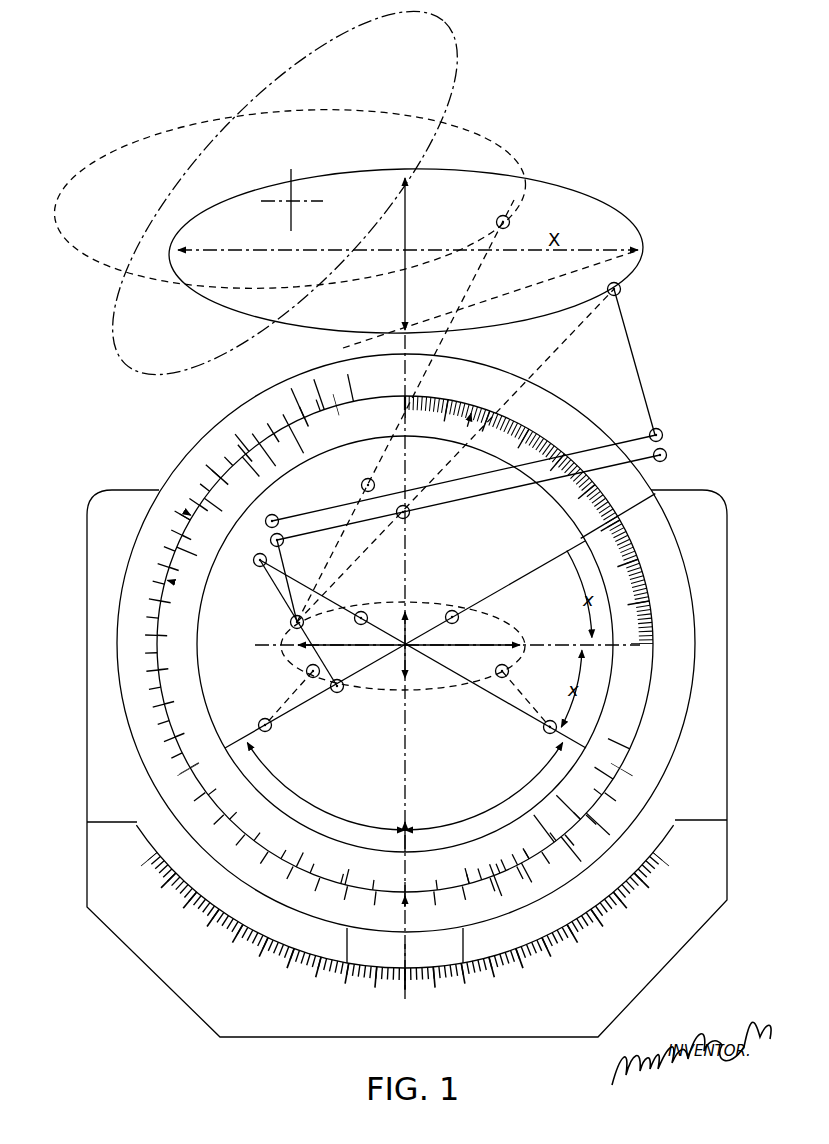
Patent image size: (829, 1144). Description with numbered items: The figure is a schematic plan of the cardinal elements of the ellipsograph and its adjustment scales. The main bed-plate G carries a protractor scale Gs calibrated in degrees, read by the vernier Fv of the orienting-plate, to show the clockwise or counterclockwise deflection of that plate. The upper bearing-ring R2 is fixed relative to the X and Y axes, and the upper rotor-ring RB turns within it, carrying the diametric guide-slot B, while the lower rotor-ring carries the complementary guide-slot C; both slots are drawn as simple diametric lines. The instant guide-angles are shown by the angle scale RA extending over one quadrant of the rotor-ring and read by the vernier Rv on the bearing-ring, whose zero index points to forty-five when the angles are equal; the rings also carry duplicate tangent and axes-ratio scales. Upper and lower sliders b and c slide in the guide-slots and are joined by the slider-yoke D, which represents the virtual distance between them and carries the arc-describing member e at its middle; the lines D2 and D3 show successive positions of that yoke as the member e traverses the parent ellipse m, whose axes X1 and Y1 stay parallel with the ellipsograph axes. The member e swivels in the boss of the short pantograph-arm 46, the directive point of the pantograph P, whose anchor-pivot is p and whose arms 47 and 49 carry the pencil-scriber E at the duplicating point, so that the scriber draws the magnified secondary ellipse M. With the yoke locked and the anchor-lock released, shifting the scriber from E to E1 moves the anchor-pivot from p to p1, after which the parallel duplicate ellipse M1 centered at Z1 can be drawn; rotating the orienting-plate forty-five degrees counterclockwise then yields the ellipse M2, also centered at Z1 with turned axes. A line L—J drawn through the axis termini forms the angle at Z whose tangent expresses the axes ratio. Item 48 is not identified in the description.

The short pantograph-arm 46 is at (283, 566).
The pantograph arm 47 is at (450, 502).
The upper arm bar 48 is at (452, 480).
The pantograph arm 49 is at (637, 372).
The main bed-plate G is at (722, 752).
The protractor scale Gs is at (413, 917).
The vernier-block Fv is at (428, 956).
The upper bearing-ring R2 is at (405, 643).
The upper rotor-ring RB is at (405, 644).
The angle scale RA is at (523, 528).
The vernier Rv is at (648, 564).
The pantograph P is at (646, 425).
The pencil-scriber E is at (625, 295).
The point E1 is at (501, 212).
The line terminus J is at (484, 306).
The vertex L is at (419, 251).
The secondary ellipse M is at (406, 251).
The parallel duplicate ellipse M1 is at (289, 199).
The rotated ellipse M2 is at (284, 212).
The ellipse axis point Z is at (409, 254).
The ellipse center Z1 is at (292, 200).
The parent ellipse X axis X1 is at (447, 636).
The parent ellipse Y axis Y1 is at (415, 667).
The parent ellipse m is at (403, 652).
The guide-slot B is at (423, 654).
The guide-slot C is at (405, 644).
The slider-yoke D is at (297, 623).
The slider-yoke position D2 is at (288, 698).
The slider-yoke position D3 is at (526, 699).
The upper slider b is at (256, 551).
The lower slider c is at (338, 695).
The arc-describing member e is at (288, 625).
The pantograph anchor-pivot p is at (410, 519).
The shifted anchor-pivot position p1 is at (363, 474).